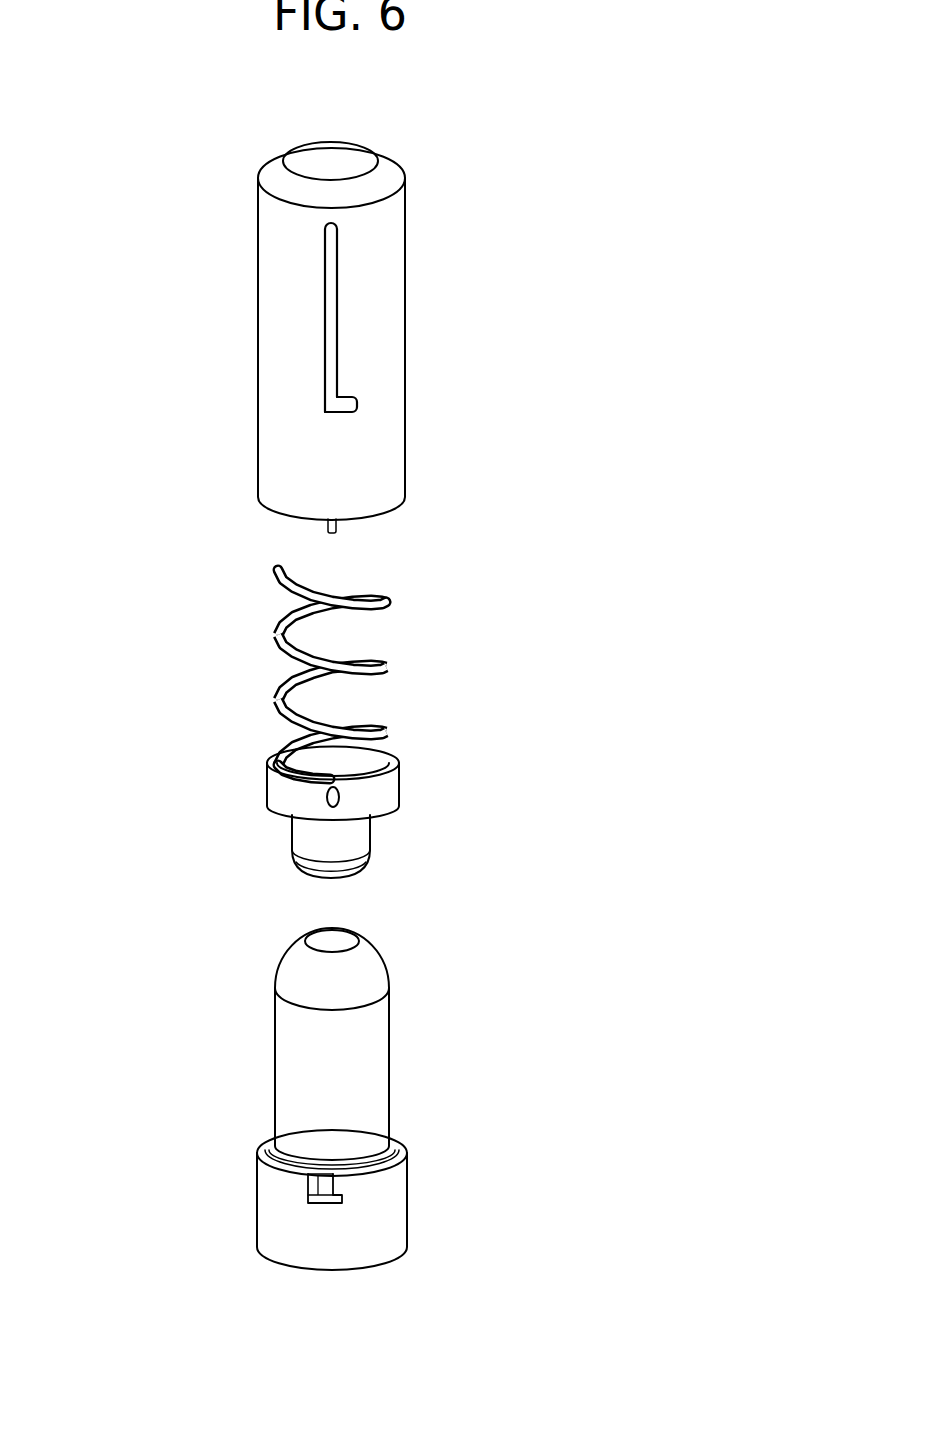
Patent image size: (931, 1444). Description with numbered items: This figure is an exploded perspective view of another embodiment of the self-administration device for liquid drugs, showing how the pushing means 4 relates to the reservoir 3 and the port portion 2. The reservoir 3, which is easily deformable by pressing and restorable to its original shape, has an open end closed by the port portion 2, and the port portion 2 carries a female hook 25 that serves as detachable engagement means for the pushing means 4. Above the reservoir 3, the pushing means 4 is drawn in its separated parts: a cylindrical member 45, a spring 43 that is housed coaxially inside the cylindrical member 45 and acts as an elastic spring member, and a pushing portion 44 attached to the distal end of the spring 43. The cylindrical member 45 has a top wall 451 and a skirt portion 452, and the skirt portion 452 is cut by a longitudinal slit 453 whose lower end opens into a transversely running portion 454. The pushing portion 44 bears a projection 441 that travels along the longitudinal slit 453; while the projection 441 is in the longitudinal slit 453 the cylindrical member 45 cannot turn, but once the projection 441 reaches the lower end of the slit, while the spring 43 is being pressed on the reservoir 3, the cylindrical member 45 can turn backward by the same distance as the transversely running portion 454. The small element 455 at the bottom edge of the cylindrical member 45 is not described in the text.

The port portion 2 is at (257, 1207).
The female hook 25 is at (347, 1195).
The reservoir 3 is at (275, 1035).
The pushing means 4 is at (232, 563).
The spring 43 is at (388, 668).
The pushing portion 44 is at (267, 786).
The projection 441 is at (340, 794).
The cylindrical member 45 is at (410, 262).
The top wall 451 is at (398, 165).
The skirt portion 452 is at (258, 341).
The longitudinal slit 453 is at (342, 293).
The transversely running portion 454 is at (358, 404).
The projection 455 is at (336, 532).